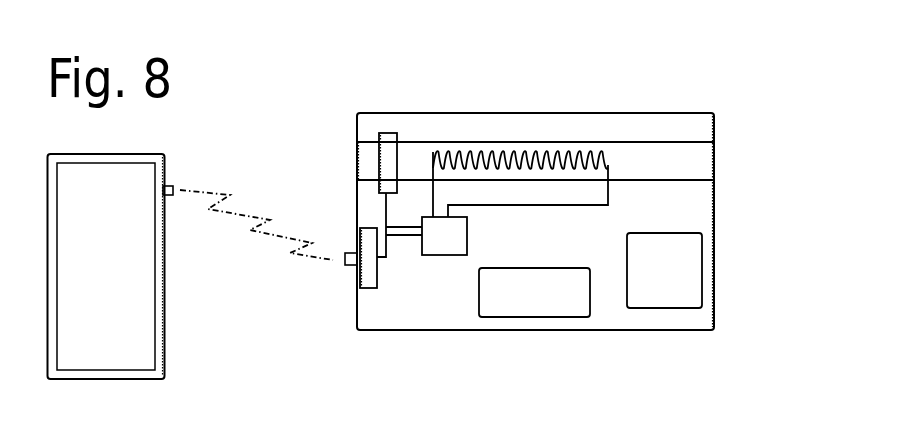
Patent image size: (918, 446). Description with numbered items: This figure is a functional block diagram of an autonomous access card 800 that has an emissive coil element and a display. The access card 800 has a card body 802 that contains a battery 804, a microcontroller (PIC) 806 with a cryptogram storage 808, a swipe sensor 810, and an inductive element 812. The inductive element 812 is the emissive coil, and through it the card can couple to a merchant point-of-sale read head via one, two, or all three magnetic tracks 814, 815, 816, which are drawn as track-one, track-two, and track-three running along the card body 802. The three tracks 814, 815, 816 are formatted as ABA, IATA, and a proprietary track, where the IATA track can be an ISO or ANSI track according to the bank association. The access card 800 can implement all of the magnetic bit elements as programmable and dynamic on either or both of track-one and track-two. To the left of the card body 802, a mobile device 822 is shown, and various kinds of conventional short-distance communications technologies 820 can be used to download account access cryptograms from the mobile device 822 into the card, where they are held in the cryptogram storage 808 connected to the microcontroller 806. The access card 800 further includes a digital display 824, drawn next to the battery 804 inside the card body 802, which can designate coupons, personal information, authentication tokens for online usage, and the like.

The access card 800 is at (296, 68).
The card body 802 is at (357, 316).
The battery 804 is at (552, 264).
The microcontroller (PIC) 806 is at (468, 232).
The cryptogram storage 808 is at (378, 270).
The swipe sensor 810 is at (391, 133).
The inductive element 812 is at (610, 155).
The magnetic track (track-1) 814 is at (700, 151).
The magnetic track (track-2) 815 is at (700, 163).
The magnetic track (track-3) 816 is at (700, 174).
The short-distance communications technologies 820 is at (270, 216).
The mobile device 822 is at (93, 291).
The digital display 824 is at (651, 291).